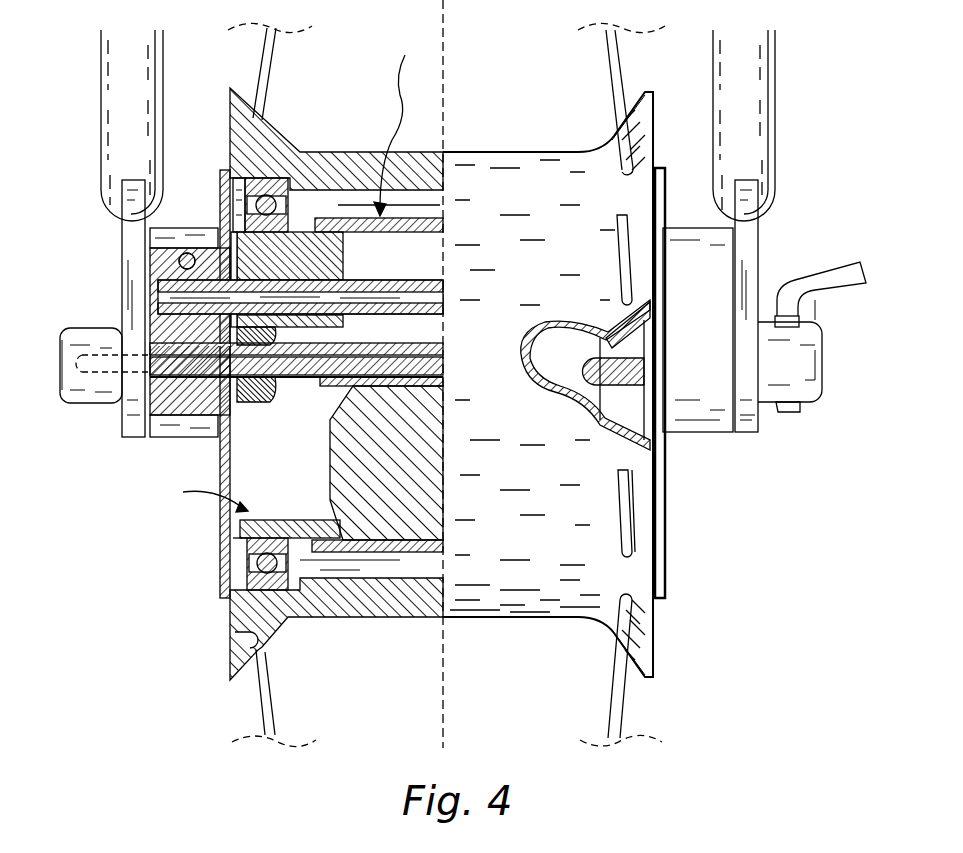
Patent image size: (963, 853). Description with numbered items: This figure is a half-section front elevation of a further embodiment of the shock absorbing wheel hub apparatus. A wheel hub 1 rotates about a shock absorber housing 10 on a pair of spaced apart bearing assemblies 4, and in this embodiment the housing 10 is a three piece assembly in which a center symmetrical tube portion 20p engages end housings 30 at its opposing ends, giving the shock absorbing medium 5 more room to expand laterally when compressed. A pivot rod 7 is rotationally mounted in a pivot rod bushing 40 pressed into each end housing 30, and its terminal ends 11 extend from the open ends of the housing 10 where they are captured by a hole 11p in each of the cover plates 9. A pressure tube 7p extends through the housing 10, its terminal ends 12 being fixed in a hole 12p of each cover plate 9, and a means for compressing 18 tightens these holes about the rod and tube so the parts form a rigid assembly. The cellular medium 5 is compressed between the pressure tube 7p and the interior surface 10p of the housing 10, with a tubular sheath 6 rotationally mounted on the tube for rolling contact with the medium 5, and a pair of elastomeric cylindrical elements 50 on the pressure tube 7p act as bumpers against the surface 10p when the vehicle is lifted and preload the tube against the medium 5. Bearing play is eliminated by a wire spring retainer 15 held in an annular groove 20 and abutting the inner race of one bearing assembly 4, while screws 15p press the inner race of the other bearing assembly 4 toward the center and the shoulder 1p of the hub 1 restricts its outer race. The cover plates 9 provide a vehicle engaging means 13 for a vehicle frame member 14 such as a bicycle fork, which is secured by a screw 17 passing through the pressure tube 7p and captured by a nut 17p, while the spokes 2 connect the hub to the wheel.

The wheel hub 1 is at (372, 617).
The shoulder 1p is at (332, 614).
The spoke 2 is at (652, 92).
The bearing assemblies 4 is at (288, 203).
The shock absorbing medium 5 is at (445, 432).
The tubular sheath 6 is at (445, 353).
The pivot rod 7 is at (445, 295).
The pressure tube 7p is at (305, 387).
The cover plates 9 is at (665, 575).
The shock absorber housing 10 is at (397, 124).
The interior surface 10p is at (198, 495).
The terminal ends 11 is at (195, 253).
The hole 11p is at (152, 284).
The terminal ends 12 is at (148, 375).
The hole 12p is at (150, 356).
The vehicle engaging means 13 is at (700, 433).
The vehicle frame member 14 is at (106, 178).
The wire spring retainer 15 is at (246, 543).
The screws 15p is at (645, 368).
The screw 17 is at (807, 397).
The nut 17p is at (60, 350).
The means for compressing 18 is at (126, 222).
The annular groove 20 is at (243, 230).
The center symmetrical tube portion 20p is at (445, 205).
The end housings 30 is at (345, 262).
The pivot rod bushing 40 is at (372, 207).
The elastomeric cylindrical elements 50 is at (258, 402).